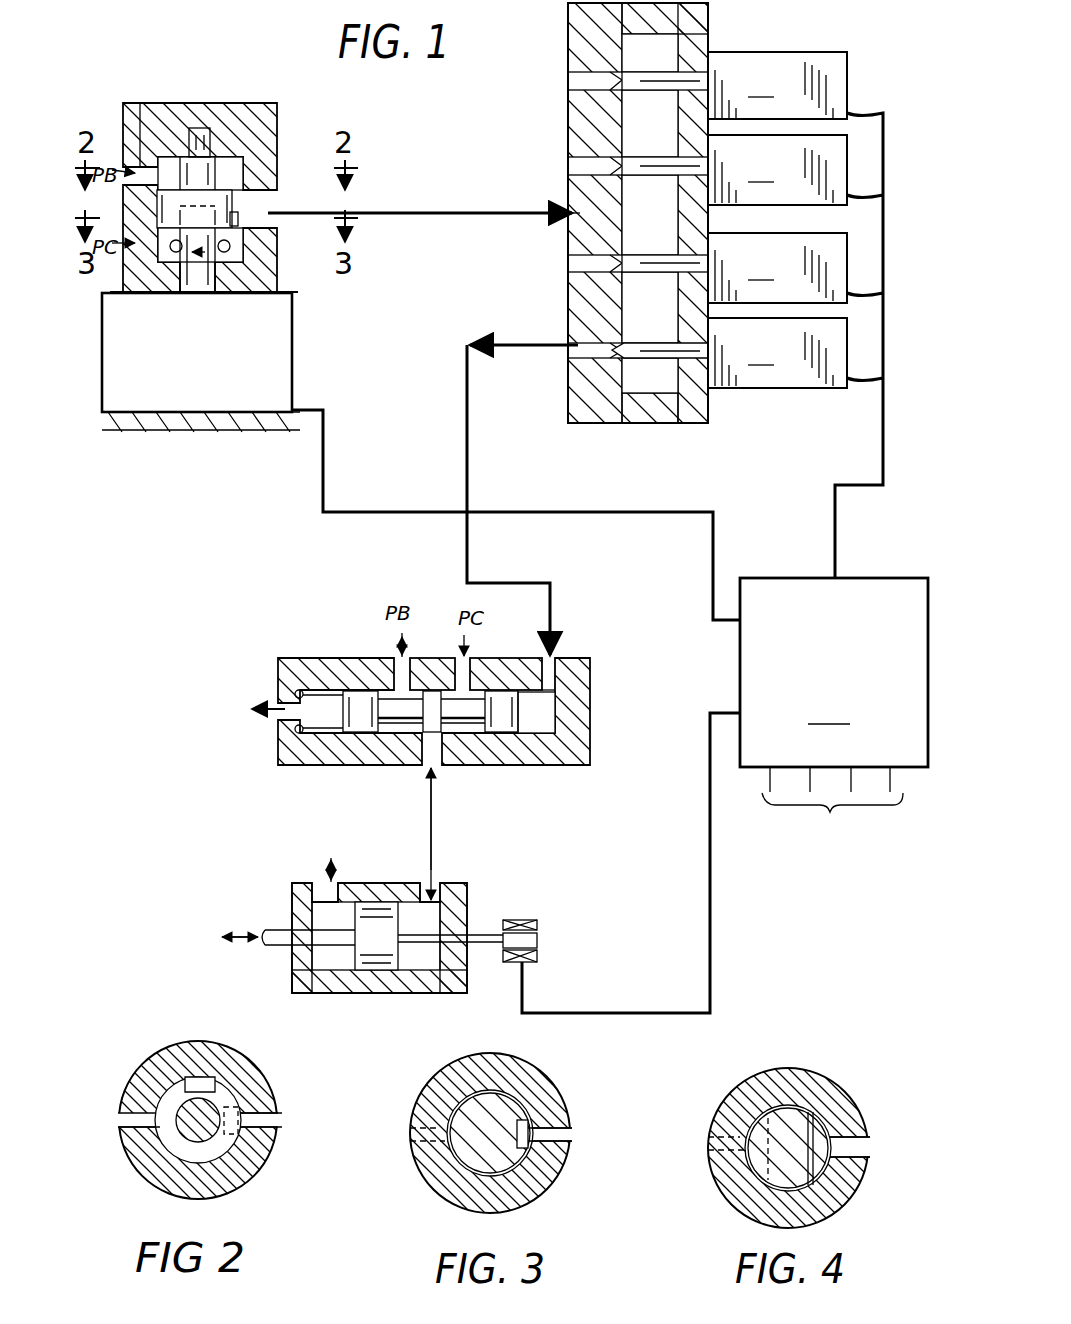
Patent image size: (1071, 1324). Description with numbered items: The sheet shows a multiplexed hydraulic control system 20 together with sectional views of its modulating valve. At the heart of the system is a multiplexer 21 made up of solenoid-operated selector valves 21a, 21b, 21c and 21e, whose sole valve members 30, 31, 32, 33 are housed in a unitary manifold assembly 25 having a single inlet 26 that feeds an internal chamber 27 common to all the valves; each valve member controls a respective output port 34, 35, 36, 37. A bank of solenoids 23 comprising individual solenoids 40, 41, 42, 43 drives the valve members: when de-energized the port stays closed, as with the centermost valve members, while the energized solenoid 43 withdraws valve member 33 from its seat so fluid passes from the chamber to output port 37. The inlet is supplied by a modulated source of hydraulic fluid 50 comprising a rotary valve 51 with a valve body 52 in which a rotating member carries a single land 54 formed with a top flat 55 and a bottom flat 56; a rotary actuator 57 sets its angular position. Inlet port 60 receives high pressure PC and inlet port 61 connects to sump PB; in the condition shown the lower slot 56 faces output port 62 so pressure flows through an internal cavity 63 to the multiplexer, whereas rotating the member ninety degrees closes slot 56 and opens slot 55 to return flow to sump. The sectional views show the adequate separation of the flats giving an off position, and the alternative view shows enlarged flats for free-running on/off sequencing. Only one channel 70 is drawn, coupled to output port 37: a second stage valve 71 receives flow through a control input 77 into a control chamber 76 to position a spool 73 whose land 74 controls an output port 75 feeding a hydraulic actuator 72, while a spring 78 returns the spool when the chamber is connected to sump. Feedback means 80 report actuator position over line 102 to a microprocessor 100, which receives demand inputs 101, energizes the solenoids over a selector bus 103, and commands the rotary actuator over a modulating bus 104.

In FIG. 1, the multiplexed hydraulic control system 20 is at (478, 167).
In FIG. 1, the multiplexer 21 is at (777, 198).
In FIG. 1, the selector valve 21a is at (855, 87).
In FIG. 1, the selector valve 21b is at (862, 160).
In FIG. 1, the selector valve 21c is at (860, 268).
In FIG. 1, the solenoid 21e is at (860, 345).
In FIG. 1, the bank of solenoids 23 is at (823, 38).
In FIG. 1, the unitary manifold assembly 25 is at (568, 418).
In FIG. 1, the single inlet 26 is at (577, 215).
In FIG. 1, the internal chamber 27 is at (666, 388).
In FIG. 1, the valve member 30 is at (650, 72).
In FIG. 1, the valve member 31 is at (642, 157).
In FIG. 1, the valve member 32 is at (642, 255).
In FIG. 1, the valve member 33 is at (642, 343).
In FIG. 1, the output port 34 is at (568, 80).
In FIG. 1, the output port 35 is at (568, 165).
In FIG. 1, the output port 36 is at (568, 263).
In FIG. 1, the output port 37 is at (575, 352).
In FIG. 1, the solenoid 40 is at (777, 85).
In FIG. 1, the solenoid 41 is at (777, 170).
In FIG. 1, the solenoid 42 is at (777, 268).
In FIG. 1, the solenoid 43 is at (777, 353).
In FIG. 1, the source of hydraulic fluid 50 is at (292, 105).
In FIG. 1, the rotary valve 51 is at (222, 103).
In FIG. 2, the rotary valve 51 is at (265, 1147).
In FIG. 3, the rotary valve 51 is at (535, 1075).
In FIG. 4, the rotary valve 51 is at (820, 1072).
In FIG. 1, the valve body 52 is at (255, 103).
In FIG. 1, the land 54 is at (250, 165).
In FIG. 2, the land 54 is at (175, 1085).
In FIG. 3, the land 54 is at (473, 1100).
In FIG. 4, the land 54 is at (755, 1130).
In FIG. 2, the flat 55 is at (200, 1080).
In FIG. 1, the flat 56 is at (240, 222).
In FIG. 2, the flat 56 is at (244, 1105).
In FIG. 3, the flat 56 is at (528, 1128).
In FIG. 4, the flat 56 is at (822, 1135).
In FIG. 1, the rotary actuator 57 is at (292, 318).
In FIG. 1, the inlet port 60 is at (123, 260).
In FIG. 2, the inlet port 60 is at (150, 1182).
In FIG. 3, the inlet port 60 is at (410, 1141).
In FIG. 4, the inlet port 60 is at (708, 1150).
In FIG. 1, the inlet port 61 is at (135, 103).
In FIG. 2, the inlet port 61 is at (128, 1148).
In FIG. 1, the output port 62 is at (240, 205).
In FIG. 2, the output port 62 is at (270, 1122).
In FIG. 3, the output port 62 is at (555, 1137).
In FIG. 4, the output port 62 is at (855, 1152).
In FIG. 1, the internal cavity 63 is at (250, 258).
In FIG. 1, the channel 70 is at (332, 628).
In FIG. 1, the second stage valve 71 is at (592, 665).
In FIG. 1, the hydraulic actuator 72 is at (455, 885).
In FIG. 1, the spool 73 is at (505, 735).
In FIG. 1, the land 74 is at (432, 662).
In FIG. 1, the output port 75 is at (430, 752).
In FIG. 1, the control chamber 76 is at (558, 722).
In FIG. 1, the control input 77 is at (548, 680).
In FIG. 1, the spring 78 is at (300, 765).
In FIG. 1, the feedback means 80 is at (530, 918).
In FIG. 1, the microprocessor 100 is at (834, 672).
In FIG. 1, the demand inputs 101 is at (830, 856).
In FIG. 1, the line 102 is at (710, 856).
In FIG. 1, the selector bus 103 is at (835, 555).
In FIG. 1, the modulating bus 104 is at (632, 512).